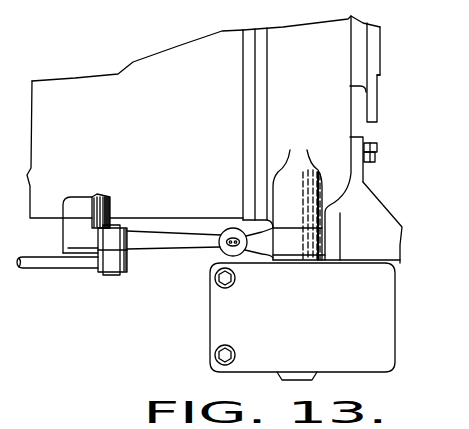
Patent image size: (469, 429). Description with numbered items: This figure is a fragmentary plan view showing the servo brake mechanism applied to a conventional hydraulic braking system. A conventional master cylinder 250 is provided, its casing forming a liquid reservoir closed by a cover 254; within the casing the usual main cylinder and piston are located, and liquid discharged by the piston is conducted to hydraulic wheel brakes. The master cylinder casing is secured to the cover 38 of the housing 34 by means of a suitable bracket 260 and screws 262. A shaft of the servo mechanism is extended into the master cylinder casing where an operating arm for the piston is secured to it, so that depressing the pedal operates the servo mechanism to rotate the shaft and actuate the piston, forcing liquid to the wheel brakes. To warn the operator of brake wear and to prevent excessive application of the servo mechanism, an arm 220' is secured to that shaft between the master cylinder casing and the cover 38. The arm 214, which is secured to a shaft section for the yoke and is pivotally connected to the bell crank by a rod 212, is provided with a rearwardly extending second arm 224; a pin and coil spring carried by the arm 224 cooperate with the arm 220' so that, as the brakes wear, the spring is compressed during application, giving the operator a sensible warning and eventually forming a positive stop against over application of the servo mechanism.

The housing 34 is at (135, 124).
The cover 38 is at (321, 138).
The arm 224 is at (186, 197).
The arm 214 is at (88, 233).
The rod 212 is at (37, 267).
The screws 262 is at (380, 155).
The bracket 260 is at (365, 207).
The arm 220' is at (273, 261).
The master cylinder 250 is at (263, 321).
The cover 254 is at (210, 332).